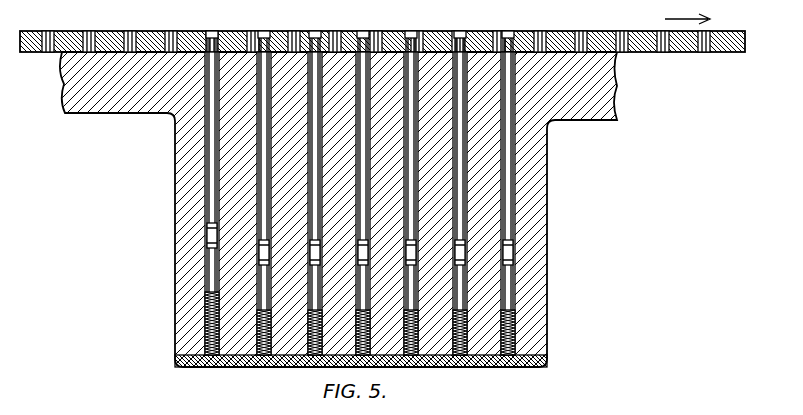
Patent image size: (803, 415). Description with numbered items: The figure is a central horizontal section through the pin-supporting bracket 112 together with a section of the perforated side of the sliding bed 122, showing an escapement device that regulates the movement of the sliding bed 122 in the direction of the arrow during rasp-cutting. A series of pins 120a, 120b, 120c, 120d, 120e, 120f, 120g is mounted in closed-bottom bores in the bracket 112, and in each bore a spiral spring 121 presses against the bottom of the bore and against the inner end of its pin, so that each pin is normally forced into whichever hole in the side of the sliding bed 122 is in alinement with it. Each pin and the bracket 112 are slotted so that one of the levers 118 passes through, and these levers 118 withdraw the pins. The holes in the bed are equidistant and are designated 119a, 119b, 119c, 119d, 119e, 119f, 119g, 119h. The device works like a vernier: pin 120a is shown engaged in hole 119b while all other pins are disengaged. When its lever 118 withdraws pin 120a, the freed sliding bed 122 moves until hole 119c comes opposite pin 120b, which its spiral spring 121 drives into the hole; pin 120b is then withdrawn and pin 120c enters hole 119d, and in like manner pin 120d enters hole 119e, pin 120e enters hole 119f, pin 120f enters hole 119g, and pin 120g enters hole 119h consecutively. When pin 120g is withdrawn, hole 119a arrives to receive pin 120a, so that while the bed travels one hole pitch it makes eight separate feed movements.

The bracket 112 is at (535, 309).
The levers 118 is at (206, 243).
The hole 119a is at (172, 26).
The hole 119b is at (213, 26).
The hole 119c is at (254, 26).
The hole 119d is at (295, 26).
The hole 119e is at (336, 26).
The hole 119f is at (377, 26).
The hole 119g is at (417, 31).
The hole 119h is at (458, 31).
The pin 120a is at (209, 140).
The pin 120b is at (262, 163).
The pin 120c is at (315, 190).
The pin 120d is at (361, 213).
The pin 120e is at (414, 142).
The pin 120f is at (463, 167).
The pin 120g is at (510, 190).
The spiral spring 121 is at (206, 323).
The sliding bed 122 is at (690, 55).